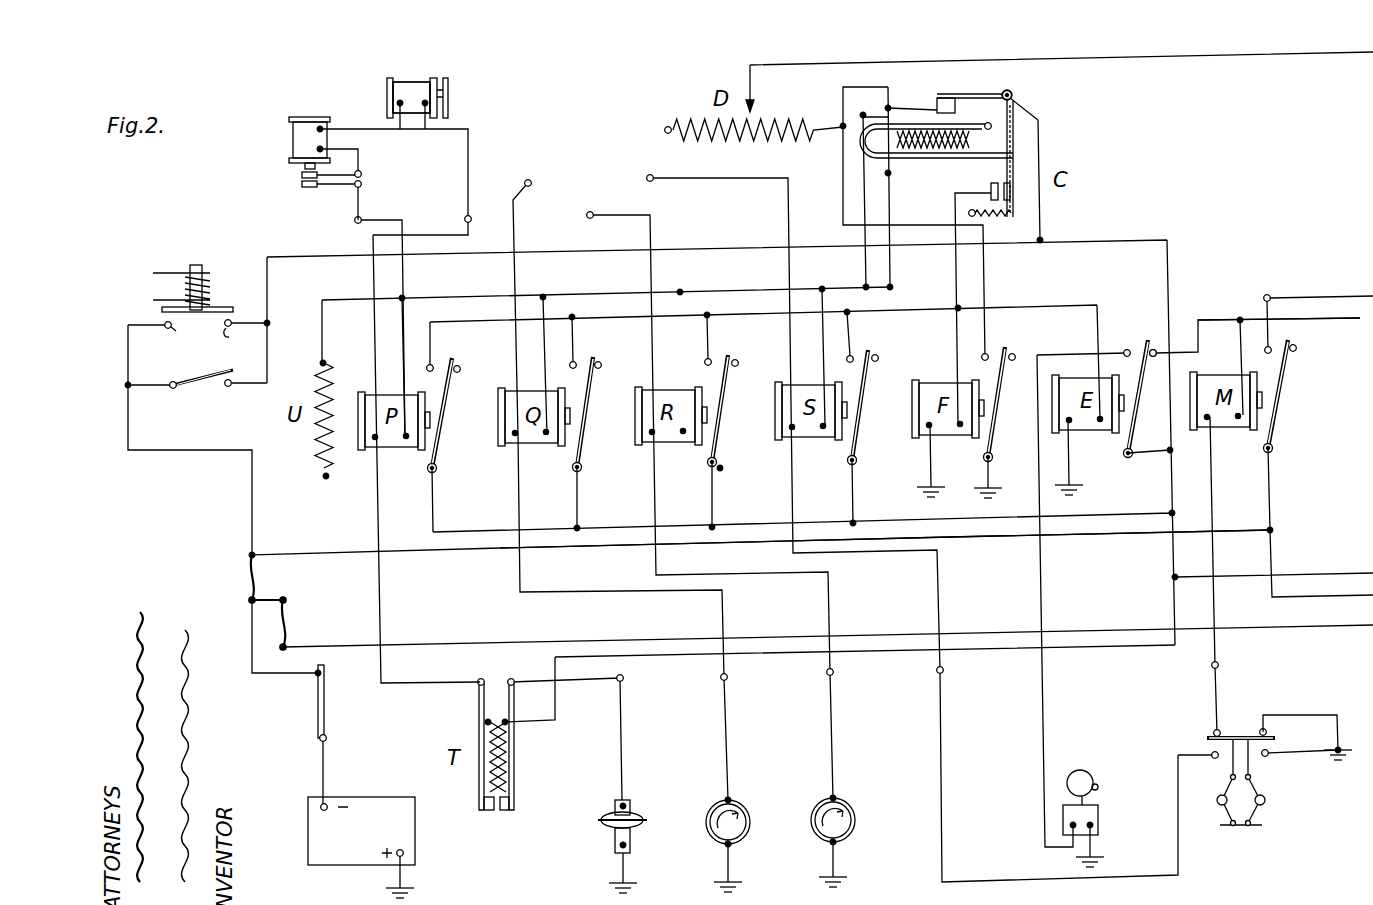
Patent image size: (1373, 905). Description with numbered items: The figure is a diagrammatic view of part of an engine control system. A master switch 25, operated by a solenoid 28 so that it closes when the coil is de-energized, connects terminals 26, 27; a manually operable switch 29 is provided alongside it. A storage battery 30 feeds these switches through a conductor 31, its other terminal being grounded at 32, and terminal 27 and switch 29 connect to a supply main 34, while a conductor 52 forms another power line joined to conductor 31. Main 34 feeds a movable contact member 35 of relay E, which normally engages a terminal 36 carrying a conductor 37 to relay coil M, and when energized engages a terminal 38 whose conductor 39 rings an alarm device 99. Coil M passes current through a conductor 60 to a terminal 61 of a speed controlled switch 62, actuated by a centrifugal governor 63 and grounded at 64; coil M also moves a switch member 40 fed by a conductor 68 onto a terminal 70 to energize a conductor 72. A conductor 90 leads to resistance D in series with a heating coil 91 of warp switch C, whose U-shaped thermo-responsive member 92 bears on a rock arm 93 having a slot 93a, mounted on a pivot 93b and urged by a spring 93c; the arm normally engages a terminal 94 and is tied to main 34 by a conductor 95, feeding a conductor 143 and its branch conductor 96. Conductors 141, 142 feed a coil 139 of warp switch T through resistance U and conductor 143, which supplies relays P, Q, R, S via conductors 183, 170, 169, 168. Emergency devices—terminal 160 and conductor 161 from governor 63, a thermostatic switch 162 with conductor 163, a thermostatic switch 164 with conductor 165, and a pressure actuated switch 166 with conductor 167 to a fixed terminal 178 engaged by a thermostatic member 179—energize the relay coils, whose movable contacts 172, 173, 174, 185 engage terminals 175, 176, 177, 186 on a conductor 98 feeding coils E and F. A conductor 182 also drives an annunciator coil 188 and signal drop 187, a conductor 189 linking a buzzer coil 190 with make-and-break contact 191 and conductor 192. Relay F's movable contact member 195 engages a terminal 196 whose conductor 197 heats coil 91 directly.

The master switch 25 is at (163, 309).
The terminal 26 is at (152, 342).
The terminal 27 is at (246, 341).
The solenoid 28 is at (197, 263).
The manually operable switch 29 is at (207, 382).
The storage battery 30 is at (361, 831).
The conductor 31 is at (252, 498).
The ground 32 is at (402, 878).
The supply main 34 is at (268, 300).
The movable contact member 35 is at (1125, 428).
The terminal 36 is at (1157, 347).
The conductor 37 is at (1213, 315).
The terminal 38 is at (1125, 350).
The conductor 39 is at (1043, 570).
The movable switch member 40 is at (1282, 403).
The conductor 52 is at (1263, 618).
The conductor 60 is at (1215, 477).
The terminal 61 is at (1222, 730).
The speed controlled switch 62 is at (1277, 738).
The centrifugal governor 63 is at (1260, 783).
The ground 64 is at (1348, 755).
The conductor 68 is at (484, 548).
The terminal 70 is at (1282, 340).
The conductor 72 is at (1345, 298).
The conductor 90 is at (1273, 55).
The heating coil 91 is at (943, 147).
The thermo-responsive member 92 is at (917, 157).
The rock arm 93 is at (988, 94).
The slot 93a is at (1015, 168).
The pivot 93b is at (1017, 93).
The spring 93c is at (982, 218).
The terminal 94 is at (933, 110).
The conductor 95 is at (1042, 223).
The branch conductor 96 is at (891, 270).
The conductor 98 is at (930, 312).
The alarm device 99 is at (1098, 808).
The coil 139 is at (513, 757).
The conductor 141 is at (555, 663).
The conductor 142 is at (349, 533).
The conductor 143 is at (447, 298).
The terminal 160 is at (1212, 754).
The conductor 161 is at (723, 180).
The thermostatically operated switch 162 is at (847, 802).
The conductor 163 is at (650, 240).
The thermostatic switch 164 is at (740, 805).
The conductor 165 is at (541, 190).
The pressure actuated switch 166 is at (635, 817).
The conductor 167 is at (625, 722).
The conductor 168 is at (825, 375).
The conductor 169 is at (697, 302).
The conductor 170 is at (543, 368).
The movable contact 172 is at (858, 428).
The movable contact 173 is at (725, 402).
The movable contact 174 is at (588, 395).
The terminal 175 is at (857, 355).
The terminal 176 is at (717, 360).
The terminal 177 is at (577, 362).
The fixed terminal 178 is at (513, 807).
The thermostatic member 179 is at (487, 800).
The conductor 182 is at (468, 163).
The conductor 183 is at (402, 338).
The movable contact member 185 is at (438, 440).
The terminal 186 is at (433, 365).
The signal drop 187 is at (450, 80).
The annunciator coil 188 is at (415, 100).
The conductor 189 is at (347, 129).
The buzzer coil 190 is at (300, 132).
The make-and-break contact 191 is at (300, 182).
The conductor 192 is at (402, 223).
The movable contact member 195 is at (1018, 433).
The terminal 196 is at (992, 352).
The conductor 197 is at (843, 213).